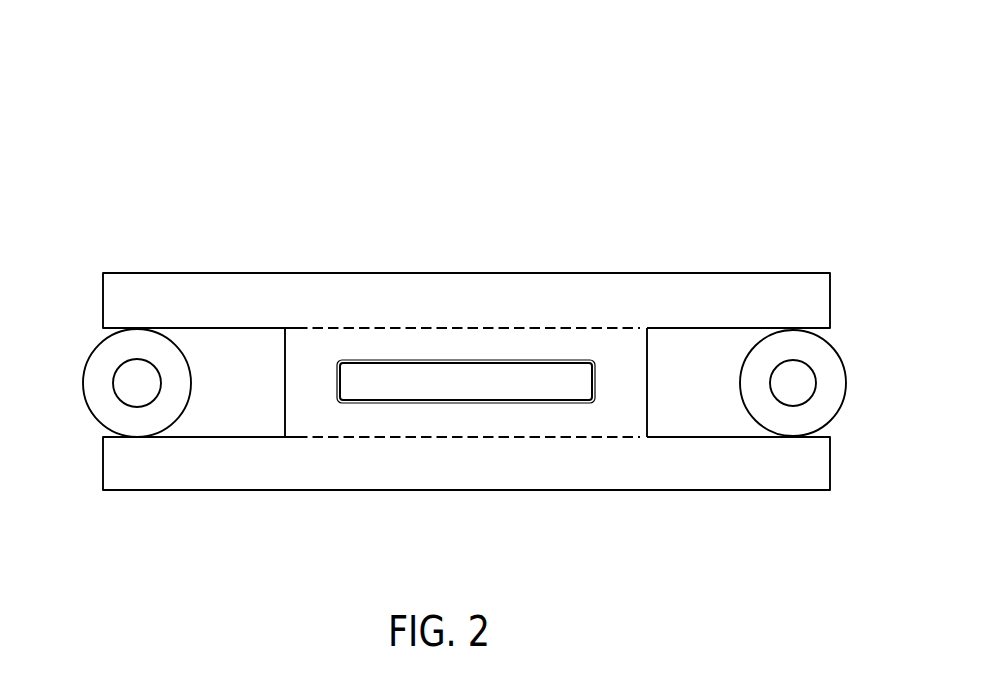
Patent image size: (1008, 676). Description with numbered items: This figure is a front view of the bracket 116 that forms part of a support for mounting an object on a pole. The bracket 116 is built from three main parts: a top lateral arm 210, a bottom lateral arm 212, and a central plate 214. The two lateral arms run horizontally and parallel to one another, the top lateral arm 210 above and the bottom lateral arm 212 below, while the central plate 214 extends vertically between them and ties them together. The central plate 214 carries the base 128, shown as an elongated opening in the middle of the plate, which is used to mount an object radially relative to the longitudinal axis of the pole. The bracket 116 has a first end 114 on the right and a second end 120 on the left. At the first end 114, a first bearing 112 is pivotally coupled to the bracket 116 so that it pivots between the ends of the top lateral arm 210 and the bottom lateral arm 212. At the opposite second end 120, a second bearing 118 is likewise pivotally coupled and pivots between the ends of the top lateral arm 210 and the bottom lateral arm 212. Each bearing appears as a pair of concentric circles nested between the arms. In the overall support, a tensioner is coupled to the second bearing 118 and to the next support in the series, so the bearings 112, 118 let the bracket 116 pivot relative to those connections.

The bracket 116 is at (132, 82).
The top lateral arm 210 is at (314, 296).
The central plate 214 is at (447, 343).
The bottom lateral arm 212 is at (373, 473).
The base 128 is at (565, 377).
The second bearing 118 is at (100, 393).
The first bearing 112 is at (830, 392).
The second end 120 is at (217, 537).
The first end 114 is at (714, 537).